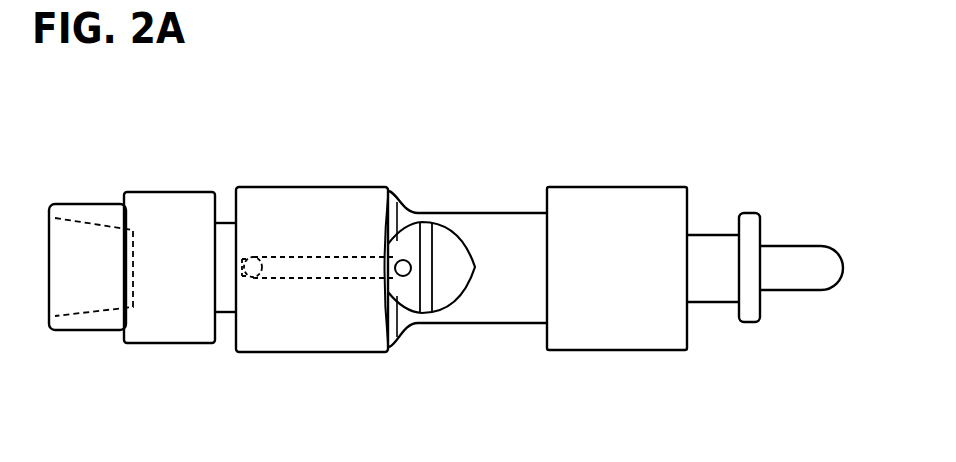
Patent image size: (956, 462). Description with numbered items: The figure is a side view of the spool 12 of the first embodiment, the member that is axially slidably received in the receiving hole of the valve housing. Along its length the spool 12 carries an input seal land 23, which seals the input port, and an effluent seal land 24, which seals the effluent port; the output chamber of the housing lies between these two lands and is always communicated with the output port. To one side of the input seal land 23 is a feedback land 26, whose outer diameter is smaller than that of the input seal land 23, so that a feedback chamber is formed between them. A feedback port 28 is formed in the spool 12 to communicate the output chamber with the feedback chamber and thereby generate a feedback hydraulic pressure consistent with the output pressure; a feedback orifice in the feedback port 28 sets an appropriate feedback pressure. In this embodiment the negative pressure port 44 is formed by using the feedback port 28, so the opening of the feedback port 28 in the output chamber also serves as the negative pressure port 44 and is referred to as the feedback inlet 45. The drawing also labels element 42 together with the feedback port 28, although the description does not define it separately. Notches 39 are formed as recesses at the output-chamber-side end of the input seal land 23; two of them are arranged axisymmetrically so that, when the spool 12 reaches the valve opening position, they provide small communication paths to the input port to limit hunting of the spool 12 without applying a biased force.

The spool 12 is at (589, 149).
The input seal land 23 is at (293, 332).
The effluent seal land 24 is at (620, 333).
The feedback land 26 is at (170, 332).
The feedback port 28 is at (320, 198).
The ejection hole 42 is at (320, 198).
The negative pressure port 44 is at (292, 260).
The notch 39 is at (392, 281).
The feedback inlet 45 is at (406, 262).